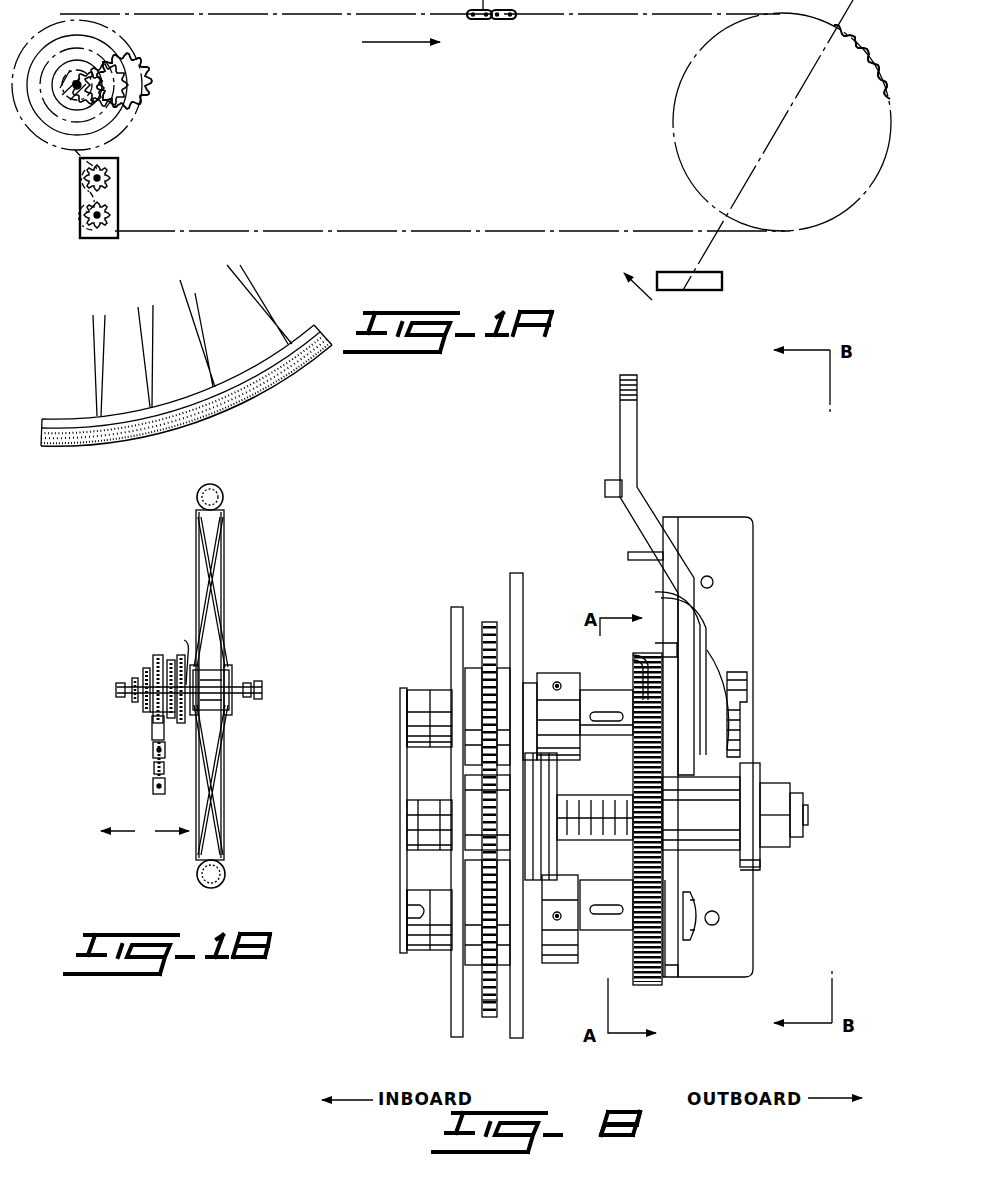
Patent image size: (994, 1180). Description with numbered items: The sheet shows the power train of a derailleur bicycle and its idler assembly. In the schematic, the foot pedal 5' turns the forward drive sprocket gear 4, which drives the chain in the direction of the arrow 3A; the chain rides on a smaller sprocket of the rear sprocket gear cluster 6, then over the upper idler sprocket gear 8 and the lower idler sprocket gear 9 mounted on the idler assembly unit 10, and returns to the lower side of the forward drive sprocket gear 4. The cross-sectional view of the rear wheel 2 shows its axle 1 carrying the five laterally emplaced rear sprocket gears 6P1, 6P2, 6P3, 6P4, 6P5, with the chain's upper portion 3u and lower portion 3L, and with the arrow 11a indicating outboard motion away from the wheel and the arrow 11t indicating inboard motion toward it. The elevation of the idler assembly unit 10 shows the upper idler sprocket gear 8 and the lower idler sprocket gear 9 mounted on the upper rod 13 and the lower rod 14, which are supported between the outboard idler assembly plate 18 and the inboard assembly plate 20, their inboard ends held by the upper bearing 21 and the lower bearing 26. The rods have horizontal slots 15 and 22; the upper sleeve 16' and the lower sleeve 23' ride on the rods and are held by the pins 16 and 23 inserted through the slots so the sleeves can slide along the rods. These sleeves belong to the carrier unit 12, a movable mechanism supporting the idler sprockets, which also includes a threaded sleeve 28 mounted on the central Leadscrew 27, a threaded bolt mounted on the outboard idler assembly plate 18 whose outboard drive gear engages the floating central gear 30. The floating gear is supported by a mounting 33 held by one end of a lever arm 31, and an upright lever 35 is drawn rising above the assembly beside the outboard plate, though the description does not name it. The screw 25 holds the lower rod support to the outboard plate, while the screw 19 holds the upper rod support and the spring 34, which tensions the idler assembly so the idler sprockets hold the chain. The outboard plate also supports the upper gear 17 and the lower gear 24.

In FIG. 1B, the axle 1 is at (216, 685).
In FIG. 1A, the rear wheel 2 is at (300, 384).
In FIG. 1B, the rear wheel 2 is at (238, 525).
In FIG. 1A, the arrow 3A is at (393, 46).
In FIG. 1B, the upper portion of drive chain 3u is at (152, 653).
In FIG. 1B, the lower portion of drive chain 3L is at (150, 796).
In FIG. 1A, the forward drive sprocket gear 4 is at (680, 74).
In FIG. 1A, the foot pedal 5' is at (694, 278).
In FIG. 1A, the rear sprocket gear cluster 6 is at (152, 76).
In FIG. 1B, the rear sprocket gear cluster 6 is at (127, 602).
In FIG. 1B, the rear sprocket gear 6P1 is at (180, 653).
In FIG. 1B, the rear sprocket gear 6P2 is at (170, 657).
In FIG. 1B, the rear sprocket gear 6P3 is at (154, 707).
In FIG. 1B, the rear sprocket gear 6P4 is at (145, 666).
In FIG. 1B, the rear sprocket gear 6P5 is at (133, 673).
In FIG. 1A, the upper idler sprocket gear 8 is at (86, 175).
In FIG. 1B, the upper idler sprocket gear 8 is at (157, 735).
In FIG. 2A, the upper idler sprocket gear 8 is at (492, 620).
In FIG. 1A, the lower idler sprocket gear 9 is at (86, 221).
In FIG. 1B, the lower idler sprocket gear 9 is at (163, 784).
In FIG. 2A, the lower idler sprocket gear 9 is at (490, 1020).
In FIG. 1A, the idler assembly unit 10 is at (128, 188).
In FIG. 1B, the idler assembly unit 10 is at (147, 766).
In FIG. 2A, the idler assembly unit 10 is at (778, 540).
In FIG. 1B, the arrow 11a is at (122, 832).
In FIG. 1B, the arrow 11t is at (164, 833).
In FIG. 2A, the carrier unit 12 is at (487, 816).
In FIG. 2A, the upper rod 13 is at (428, 690).
In FIG. 2A, the lower rod 14 is at (422, 952).
In FIG. 2A, the horizontal slot 15 is at (596, 722).
In FIG. 2A, the pin 16 is at (555, 702).
In FIG. 2A, the upper sleeve 16' is at (553, 658).
In FIG. 2A, the upper gear 17 is at (640, 660).
In FIG. 2A, the outboard idler assembly plate 18 is at (676, 978).
In FIG. 2A, the screw 19 is at (738, 683).
In FIG. 2A, the inboard assembly plate 20 is at (400, 773).
In FIG. 2A, the upper bearing 21 is at (410, 722).
In FIG. 2A, the horizontal slot 22 is at (616, 905).
In FIG. 2A, the pin 23 is at (563, 907).
In FIG. 2A, the lower sleeve 23' is at (570, 954).
In FIG. 2A, the lower gear 24 is at (640, 985).
In FIG. 2A, the screw 25 is at (698, 928).
In FIG. 2A, the lower bearing 26 is at (405, 900).
In FIG. 2A, the Leadscrew 27 is at (405, 808).
In FIG. 2A, the threaded sleeve 28 is at (545, 792).
In FIG. 2A, the floating central gear 30 is at (688, 842).
In FIG. 2A, the lever arm 31 is at (755, 777).
In FIG. 2A, the mounting 33 is at (768, 812).
In FIG. 2A, the spring 34 is at (708, 575).
In FIG. 2A, the lever 35 is at (638, 440).